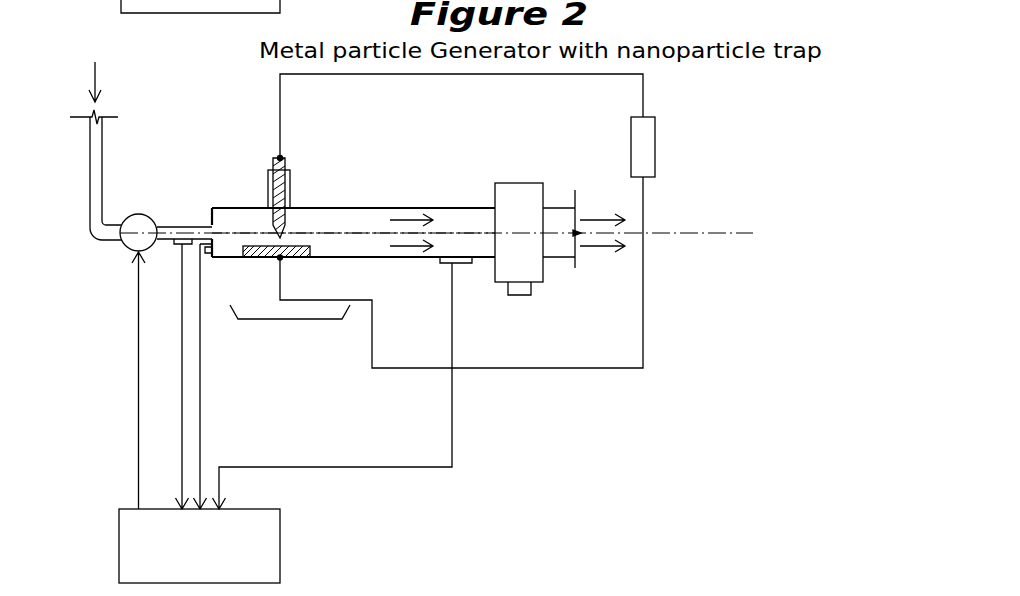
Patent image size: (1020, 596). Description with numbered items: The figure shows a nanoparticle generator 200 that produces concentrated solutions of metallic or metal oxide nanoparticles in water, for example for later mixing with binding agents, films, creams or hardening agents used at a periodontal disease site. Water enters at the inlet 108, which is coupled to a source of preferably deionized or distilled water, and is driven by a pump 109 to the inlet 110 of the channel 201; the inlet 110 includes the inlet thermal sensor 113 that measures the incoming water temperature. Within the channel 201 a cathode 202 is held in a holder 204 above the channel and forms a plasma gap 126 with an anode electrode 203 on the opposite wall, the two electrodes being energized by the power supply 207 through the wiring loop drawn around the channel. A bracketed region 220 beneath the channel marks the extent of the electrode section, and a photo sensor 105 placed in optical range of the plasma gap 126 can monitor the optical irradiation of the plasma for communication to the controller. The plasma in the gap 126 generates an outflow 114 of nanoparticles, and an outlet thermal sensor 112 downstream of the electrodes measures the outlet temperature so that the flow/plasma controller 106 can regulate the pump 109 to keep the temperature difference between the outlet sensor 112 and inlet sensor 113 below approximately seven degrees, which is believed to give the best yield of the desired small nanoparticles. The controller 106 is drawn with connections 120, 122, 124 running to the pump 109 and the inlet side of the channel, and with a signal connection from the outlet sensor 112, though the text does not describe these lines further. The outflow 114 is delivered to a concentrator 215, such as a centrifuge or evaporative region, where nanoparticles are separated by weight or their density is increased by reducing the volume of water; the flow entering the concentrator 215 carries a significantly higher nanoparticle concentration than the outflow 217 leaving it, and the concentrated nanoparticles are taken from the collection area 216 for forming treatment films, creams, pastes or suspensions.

The photo sensor 105 is at (203, 244).
The flow/plasma controller 106 is at (119, 508).
The inlet 108 is at (107, 93).
The pump 109 is at (127, 247).
The inlet 110 is at (179, 226).
The outlet thermal sensor 112 is at (442, 263).
The inlet thermal sensor 113 is at (177, 245).
The outflow 114 is at (403, 222).
The control line 120 is at (131, 380).
The control line 122 is at (173, 376).
The control line 124 is at (211, 376).
The plasma gap 126 is at (255, 220).
The nanoparticle generator 200 is at (252, 147).
The channel 201 is at (310, 225).
The cathode 202 is at (287, 222).
The anode electrode 203 is at (303, 260).
The electrode holder 204 is at (268, 190).
The power supply 207 is at (548, 221).
The concentrator 215 is at (508, 183).
The collection area 216 is at (507, 295).
The outflow 217 is at (586, 229).
The spark gap region 220 is at (290, 326).